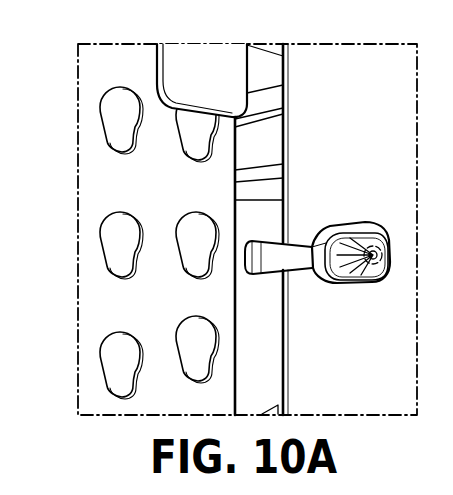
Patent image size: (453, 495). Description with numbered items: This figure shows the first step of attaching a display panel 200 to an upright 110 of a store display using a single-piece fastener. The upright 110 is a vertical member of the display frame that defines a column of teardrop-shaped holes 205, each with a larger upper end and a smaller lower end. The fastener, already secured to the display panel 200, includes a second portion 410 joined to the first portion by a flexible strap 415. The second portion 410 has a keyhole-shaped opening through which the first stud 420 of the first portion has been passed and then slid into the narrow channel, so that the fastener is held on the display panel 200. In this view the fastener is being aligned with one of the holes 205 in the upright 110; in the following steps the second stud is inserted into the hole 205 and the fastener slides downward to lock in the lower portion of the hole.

The display panel 200 is at (335, 77).
The upright 110 is at (103, 312).
The hole 205 is at (195, 253).
The second portion 410 is at (356, 227).
The flexible strap 415 is at (265, 268).
The first stud 420 is at (373, 258).